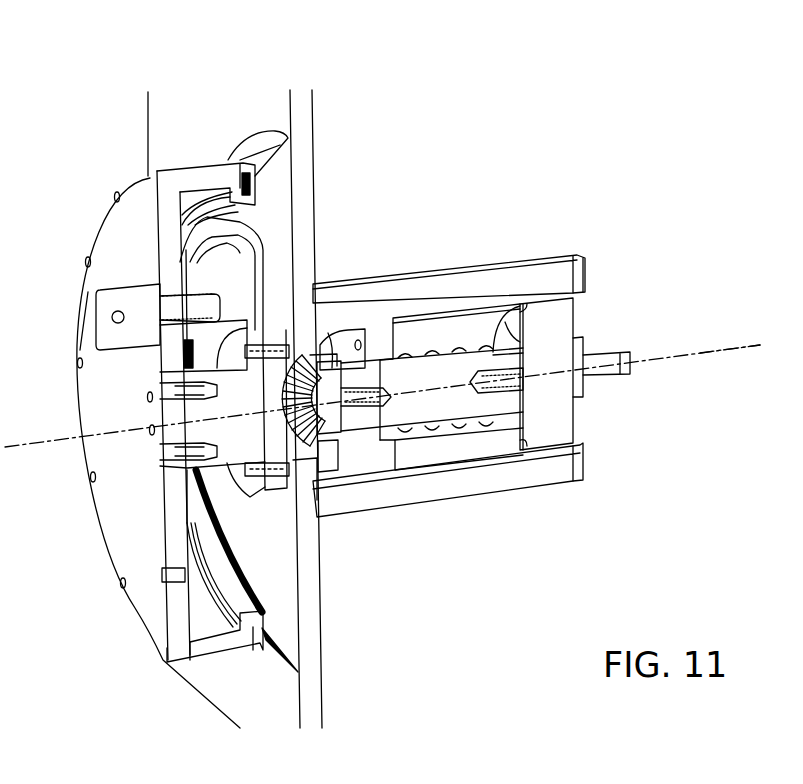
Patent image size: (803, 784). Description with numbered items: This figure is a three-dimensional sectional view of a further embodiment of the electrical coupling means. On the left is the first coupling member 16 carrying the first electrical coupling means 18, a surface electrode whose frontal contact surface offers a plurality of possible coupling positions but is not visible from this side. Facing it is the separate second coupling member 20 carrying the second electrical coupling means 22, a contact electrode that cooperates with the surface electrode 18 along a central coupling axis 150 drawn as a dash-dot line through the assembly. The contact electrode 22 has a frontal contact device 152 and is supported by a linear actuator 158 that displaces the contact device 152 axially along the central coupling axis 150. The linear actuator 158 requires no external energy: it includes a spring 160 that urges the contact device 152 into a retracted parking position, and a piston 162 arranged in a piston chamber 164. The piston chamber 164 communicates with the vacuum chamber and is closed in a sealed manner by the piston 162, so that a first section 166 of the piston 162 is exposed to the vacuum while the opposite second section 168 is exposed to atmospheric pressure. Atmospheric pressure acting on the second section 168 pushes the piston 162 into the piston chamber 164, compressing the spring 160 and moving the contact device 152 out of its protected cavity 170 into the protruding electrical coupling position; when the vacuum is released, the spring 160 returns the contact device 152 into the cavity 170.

The first coupling member 16 is at (292, 117).
The first electrical coupling means 18 is at (278, 425).
The second coupling member 20 is at (585, 77).
The second electrical coupling means 22 is at (305, 425).
The central coupling axis 150 is at (737, 350).
The frontal contact device 152 is at (293, 420).
The linear actuator 158 is at (612, 428).
The spring 160 is at (443, 353).
The piston 162 is at (548, 413).
The piston chamber 164 is at (437, 443).
The first section of the piston 166 is at (515, 328).
The second section of the piston 168 is at (576, 320).
The cavity 170 is at (333, 340).